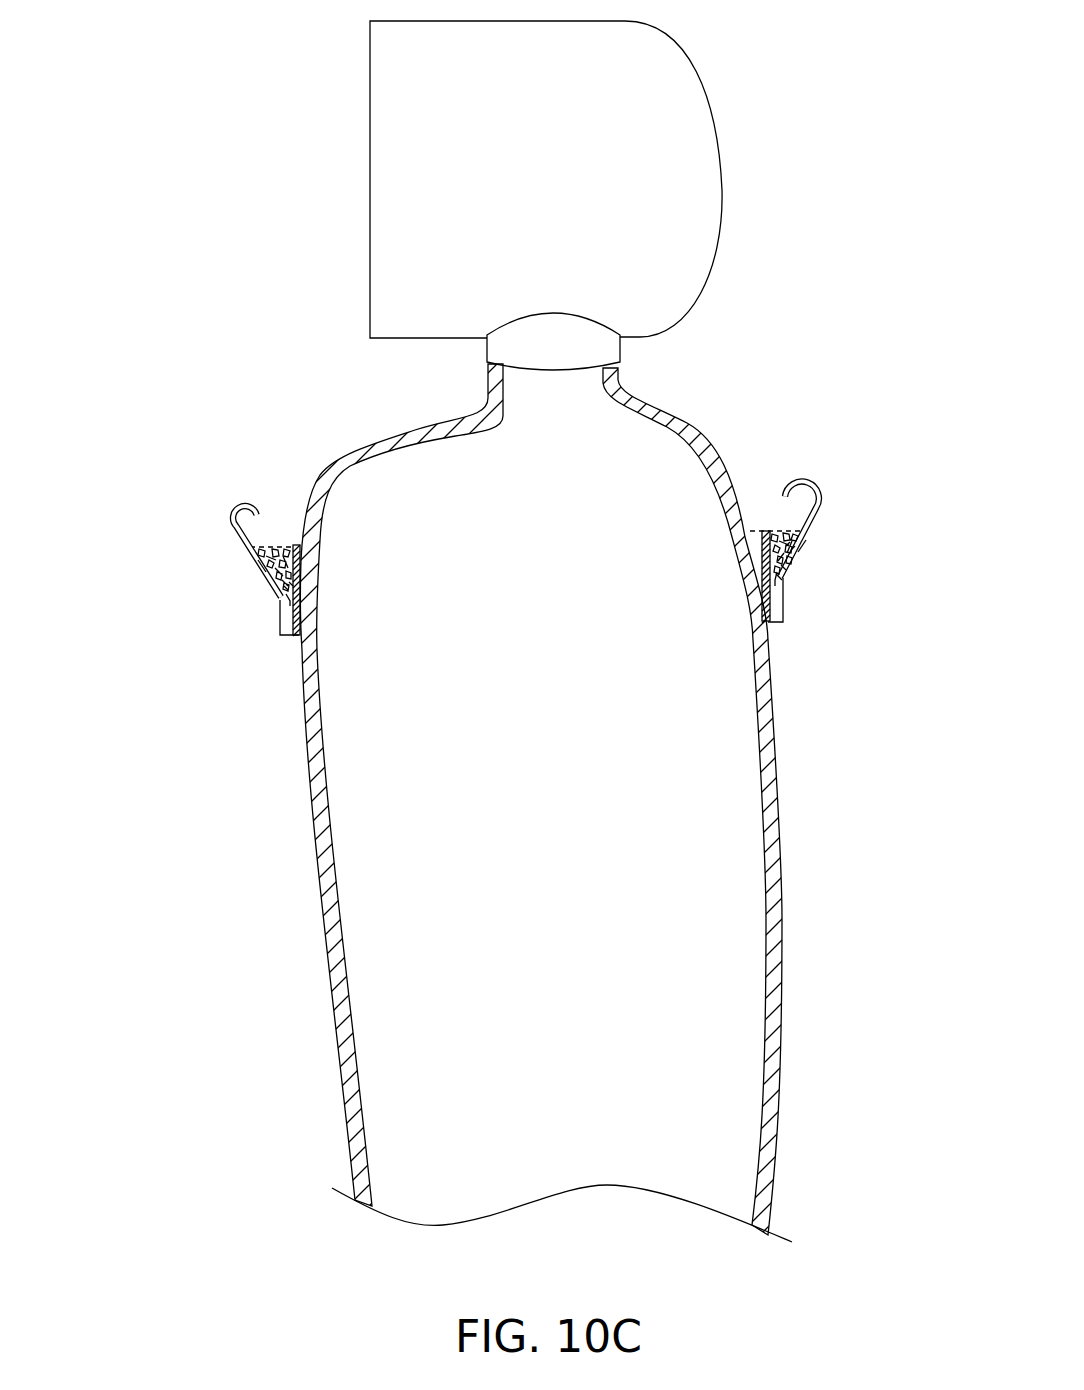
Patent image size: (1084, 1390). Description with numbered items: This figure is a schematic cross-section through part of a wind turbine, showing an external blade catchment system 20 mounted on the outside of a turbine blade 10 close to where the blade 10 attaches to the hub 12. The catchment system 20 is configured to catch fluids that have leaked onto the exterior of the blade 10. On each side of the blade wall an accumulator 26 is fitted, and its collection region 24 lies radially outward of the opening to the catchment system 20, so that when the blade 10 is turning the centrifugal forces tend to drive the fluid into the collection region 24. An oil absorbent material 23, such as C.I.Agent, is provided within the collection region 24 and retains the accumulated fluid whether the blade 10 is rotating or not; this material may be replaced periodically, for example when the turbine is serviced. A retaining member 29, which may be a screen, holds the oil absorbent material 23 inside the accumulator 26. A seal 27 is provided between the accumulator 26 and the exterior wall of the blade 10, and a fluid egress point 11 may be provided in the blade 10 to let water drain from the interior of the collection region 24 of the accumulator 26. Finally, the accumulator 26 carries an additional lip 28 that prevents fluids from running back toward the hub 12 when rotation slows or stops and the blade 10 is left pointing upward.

The turbine blade 10 is at (326, 957).
The fluid egress point 11 is at (778, 573).
The hub 12 is at (707, 273).
The catchment system 20 is at (145, 536).
The oil absorbent material 23 is at (293, 567).
The collection region 24 is at (288, 587).
The accumulator 26 is at (247, 563).
The seal 27 is at (297, 637).
The lip 28 is at (231, 503).
The retaining member 29 is at (287, 543).